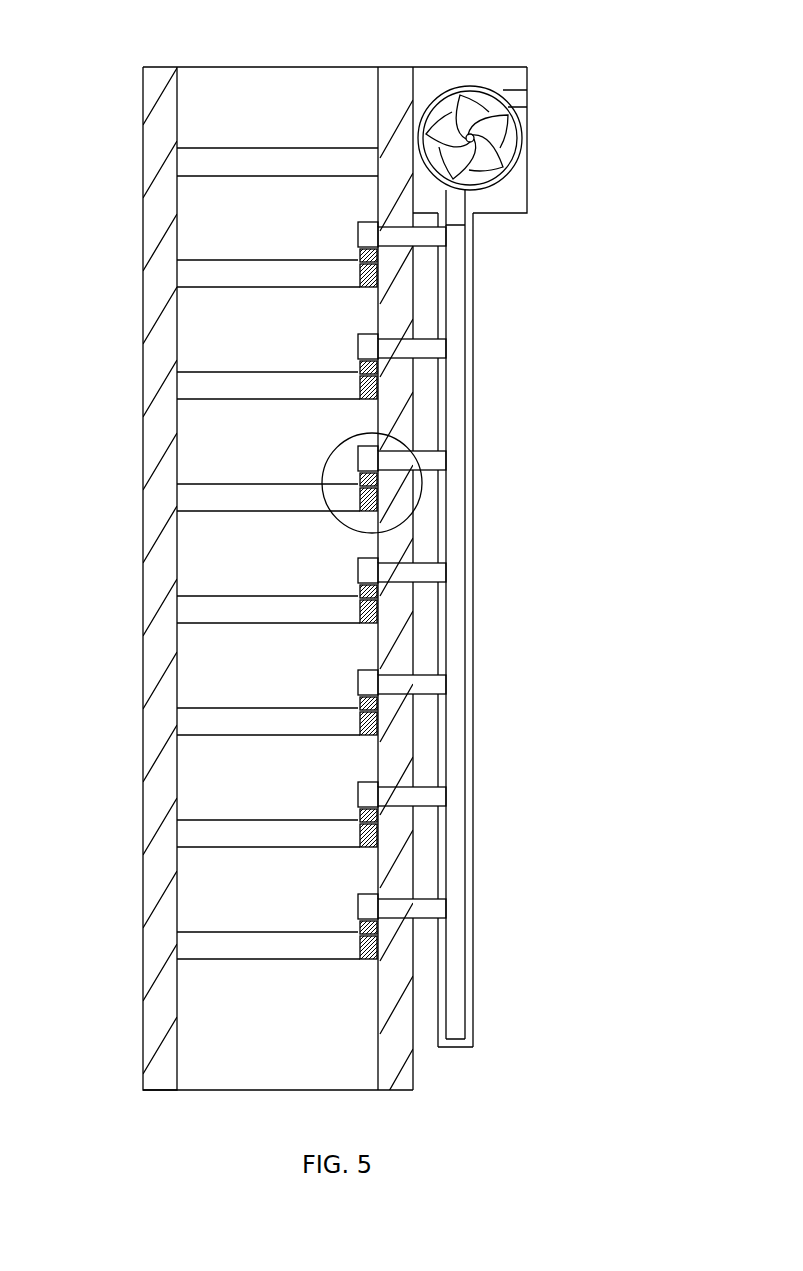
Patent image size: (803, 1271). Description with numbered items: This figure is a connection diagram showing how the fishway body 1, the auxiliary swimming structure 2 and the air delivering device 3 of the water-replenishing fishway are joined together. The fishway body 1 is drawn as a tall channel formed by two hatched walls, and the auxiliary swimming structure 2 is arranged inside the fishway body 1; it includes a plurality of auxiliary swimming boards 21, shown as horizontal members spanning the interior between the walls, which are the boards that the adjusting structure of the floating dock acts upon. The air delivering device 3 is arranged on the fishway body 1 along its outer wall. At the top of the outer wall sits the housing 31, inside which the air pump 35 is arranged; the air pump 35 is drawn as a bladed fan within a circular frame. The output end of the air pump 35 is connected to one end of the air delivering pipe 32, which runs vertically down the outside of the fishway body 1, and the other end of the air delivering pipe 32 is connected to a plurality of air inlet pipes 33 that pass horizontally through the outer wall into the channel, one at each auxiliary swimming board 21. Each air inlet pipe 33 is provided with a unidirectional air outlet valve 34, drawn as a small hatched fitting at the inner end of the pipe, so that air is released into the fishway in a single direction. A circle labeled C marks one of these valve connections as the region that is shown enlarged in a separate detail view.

The fishway body 1 is at (164, 432).
The auxiliary swimming structure 2 is at (292, 267).
The auxiliary swimming board 21 is at (267, 833).
The air delivering device 3 is at (427, 796).
The housing 31 is at (512, 183).
The air delivering pipe 32 is at (455, 391).
The air inlet pipe 33 is at (427, 578).
The unidirectional air outlet valve 34 is at (365, 687).
The air pump 35 is at (500, 133).
The enlarged region C is at (348, 525).